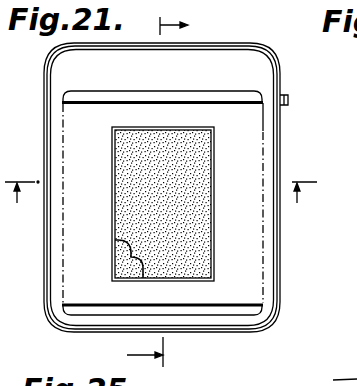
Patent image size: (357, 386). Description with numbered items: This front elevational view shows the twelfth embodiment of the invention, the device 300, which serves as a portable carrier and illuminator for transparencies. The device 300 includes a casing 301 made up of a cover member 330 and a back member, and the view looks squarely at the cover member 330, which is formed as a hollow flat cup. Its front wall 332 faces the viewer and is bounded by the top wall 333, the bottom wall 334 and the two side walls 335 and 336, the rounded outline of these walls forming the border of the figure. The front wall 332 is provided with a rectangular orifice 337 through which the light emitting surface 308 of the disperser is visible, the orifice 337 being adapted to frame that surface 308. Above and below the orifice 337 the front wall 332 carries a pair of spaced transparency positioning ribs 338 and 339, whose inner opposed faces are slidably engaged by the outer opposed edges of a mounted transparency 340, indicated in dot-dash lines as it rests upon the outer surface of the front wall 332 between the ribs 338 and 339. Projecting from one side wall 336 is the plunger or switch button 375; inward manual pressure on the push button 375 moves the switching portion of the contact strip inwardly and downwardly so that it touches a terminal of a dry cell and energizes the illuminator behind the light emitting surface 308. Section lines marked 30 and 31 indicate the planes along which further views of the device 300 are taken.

The device 300 is at (253, 44).
The casing 301 is at (248, 262).
The light emitting surface 308 is at (190, 182).
The cover member 330 is at (248, 68).
The front wall 332 is at (82, 149).
The top wall 333 is at (140, 43).
The bottom wall 334 is at (203, 336).
The side wall 335 is at (47, 265).
The side wall 336 is at (356, 282).
The rectangular orifice 337 is at (113, 270).
The transparency positioning rib 338 is at (192, 99).
The transparency positioning rib 339 is at (211, 307).
The mounted transparency 340 is at (263, 128).
The push button 375 is at (289, 100).
The section line 30 is at (161, 203).
The section line 31 is at (164, 190).